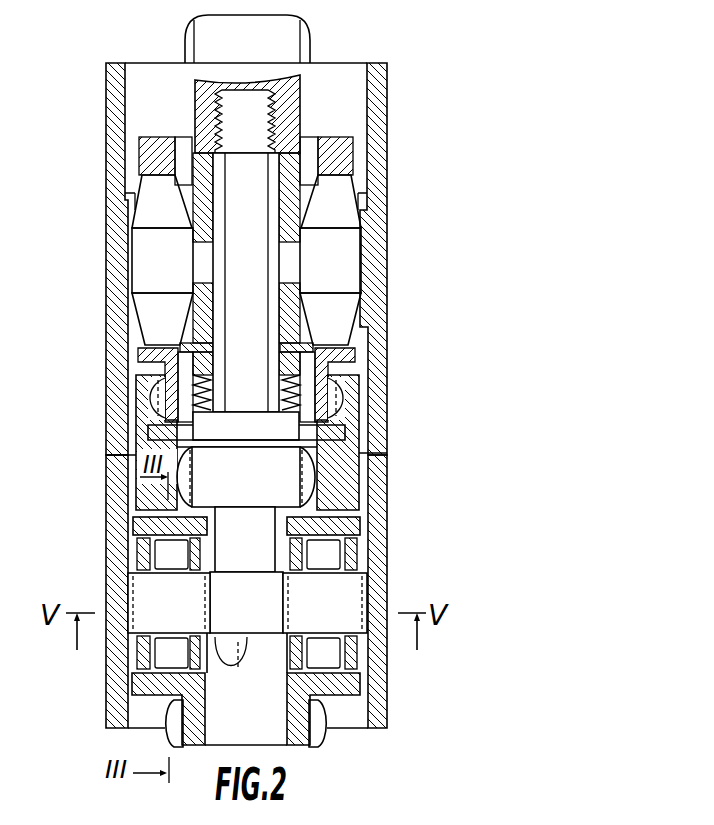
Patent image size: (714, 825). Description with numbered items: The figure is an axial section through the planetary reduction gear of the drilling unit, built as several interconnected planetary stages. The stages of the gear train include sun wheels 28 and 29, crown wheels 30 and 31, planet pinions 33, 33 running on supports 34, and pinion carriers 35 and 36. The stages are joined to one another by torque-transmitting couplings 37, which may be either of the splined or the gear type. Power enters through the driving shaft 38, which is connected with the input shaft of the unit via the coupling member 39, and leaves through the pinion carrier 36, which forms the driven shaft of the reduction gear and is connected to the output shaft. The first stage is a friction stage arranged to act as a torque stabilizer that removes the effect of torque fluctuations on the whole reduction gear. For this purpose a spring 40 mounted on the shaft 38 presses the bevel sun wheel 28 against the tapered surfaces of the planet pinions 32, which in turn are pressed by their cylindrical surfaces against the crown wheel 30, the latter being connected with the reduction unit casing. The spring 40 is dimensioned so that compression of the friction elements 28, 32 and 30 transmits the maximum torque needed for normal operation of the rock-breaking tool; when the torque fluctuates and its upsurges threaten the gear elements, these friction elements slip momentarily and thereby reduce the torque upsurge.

The bevel sun wheel 28 is at (287, 222).
The sun wheel 29 is at (257, 522).
The crown wheel 30 is at (378, 98).
The crown wheel 31 is at (118, 678).
The planet pinion 32 is at (142, 245).
The planet pinion 33 is at (142, 592).
The support 34 is at (345, 557).
The pinion carrier 35 is at (352, 357).
The pinion carrier 36 is at (303, 733).
The torque-transmitting coupling 37 is at (138, 505).
The driving shaft 38 is at (235, 327).
The coupling member 39 is at (288, 38).
The spring 40 is at (283, 402).